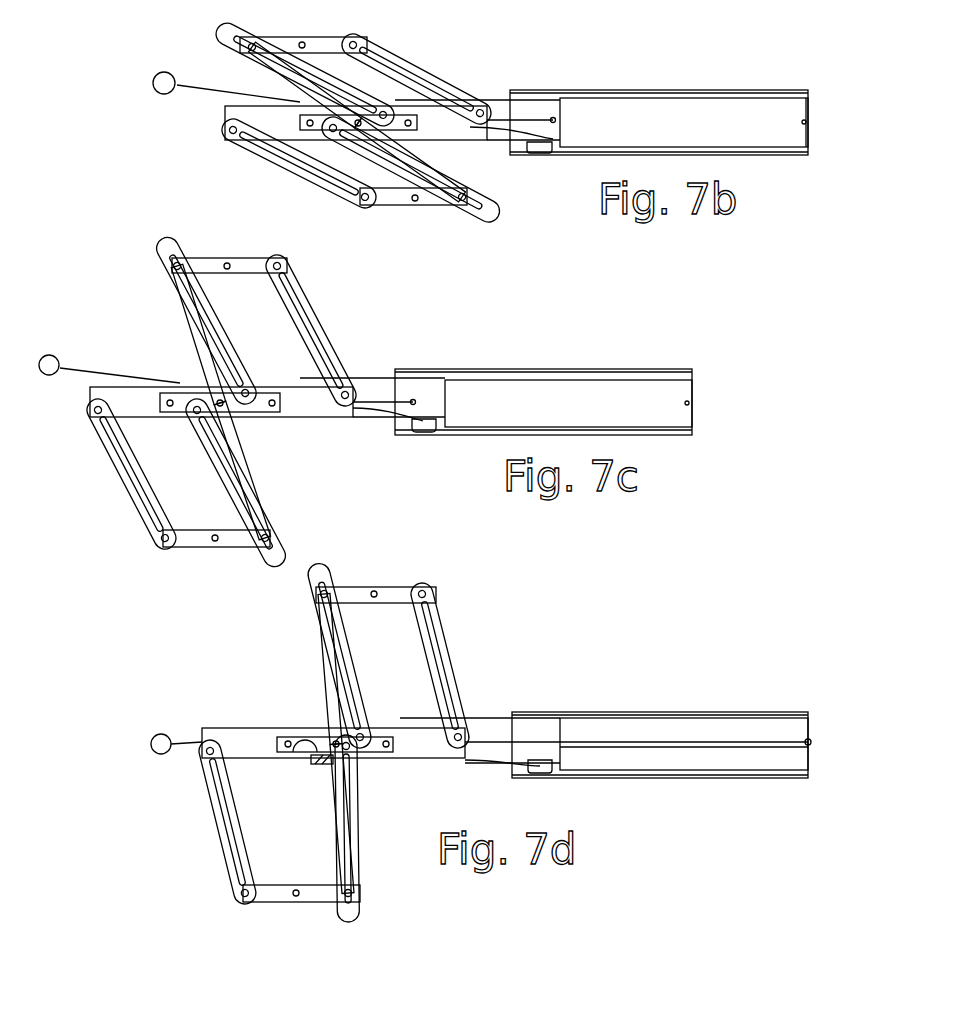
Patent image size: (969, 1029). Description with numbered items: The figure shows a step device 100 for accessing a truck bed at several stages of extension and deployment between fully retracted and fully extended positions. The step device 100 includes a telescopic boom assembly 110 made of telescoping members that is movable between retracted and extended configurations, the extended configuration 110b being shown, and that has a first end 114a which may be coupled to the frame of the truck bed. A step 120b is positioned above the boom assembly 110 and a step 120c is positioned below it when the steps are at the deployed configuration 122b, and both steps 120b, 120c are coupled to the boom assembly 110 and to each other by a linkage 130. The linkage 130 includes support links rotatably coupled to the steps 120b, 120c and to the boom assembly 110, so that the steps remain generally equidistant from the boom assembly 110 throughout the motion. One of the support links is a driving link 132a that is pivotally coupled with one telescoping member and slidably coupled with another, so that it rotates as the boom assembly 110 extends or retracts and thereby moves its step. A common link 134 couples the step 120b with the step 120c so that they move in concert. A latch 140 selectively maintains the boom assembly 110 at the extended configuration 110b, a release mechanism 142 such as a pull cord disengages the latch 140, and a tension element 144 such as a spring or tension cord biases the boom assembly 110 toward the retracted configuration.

In FIG. 7b, the step device 100 is at (463, 134).
In FIG. 7c, the step device 100 is at (424, 409).
In FIG. 7d, the step device 100 is at (451, 756).
In FIG. 7b, the telescopic boom assembly 110 is at (670, 83).
In FIG. 7c, the telescopic boom assembly 110 is at (633, 365).
In FIG. 7d, the telescopic boom assembly 110 is at (660, 700).
In FIG. 7d, the extended configuration 110b is at (543, 708).
In FIG. 7b, the first end 114a is at (805, 82).
In FIG. 7b, the step 120b is at (332, 37).
In FIG. 7c, the step 120b is at (240, 257).
In FIG. 7d, the step 120b is at (365, 592).
In FIG. 7b, the step 120c is at (407, 207).
In FIG. 7c, the step 120c is at (213, 547).
In FIG. 7d, the step 120c is at (317, 902).
In FIG. 7d, the deployed configuration 122b is at (259, 909).
In FIG. 7b, the linkage 130 is at (371, 128).
In FIG. 7b, the driving link 132a is at (448, 75).
In FIG. 7b, the common link 134 is at (533, 238).
In FIG. 7b, the latch 140 is at (540, 153).
In FIG. 7c, the latch 140 is at (423, 437).
In FIG. 7d, the latch 140 is at (343, 766).
In FIG. 7b, the release mechanism 142 is at (145, 73).
In FIG. 7c, the release mechanism 142 is at (42, 354).
In FIG. 7d, the release mechanism 142 is at (146, 740).
In FIG. 7d, the tension element 144 is at (722, 747).